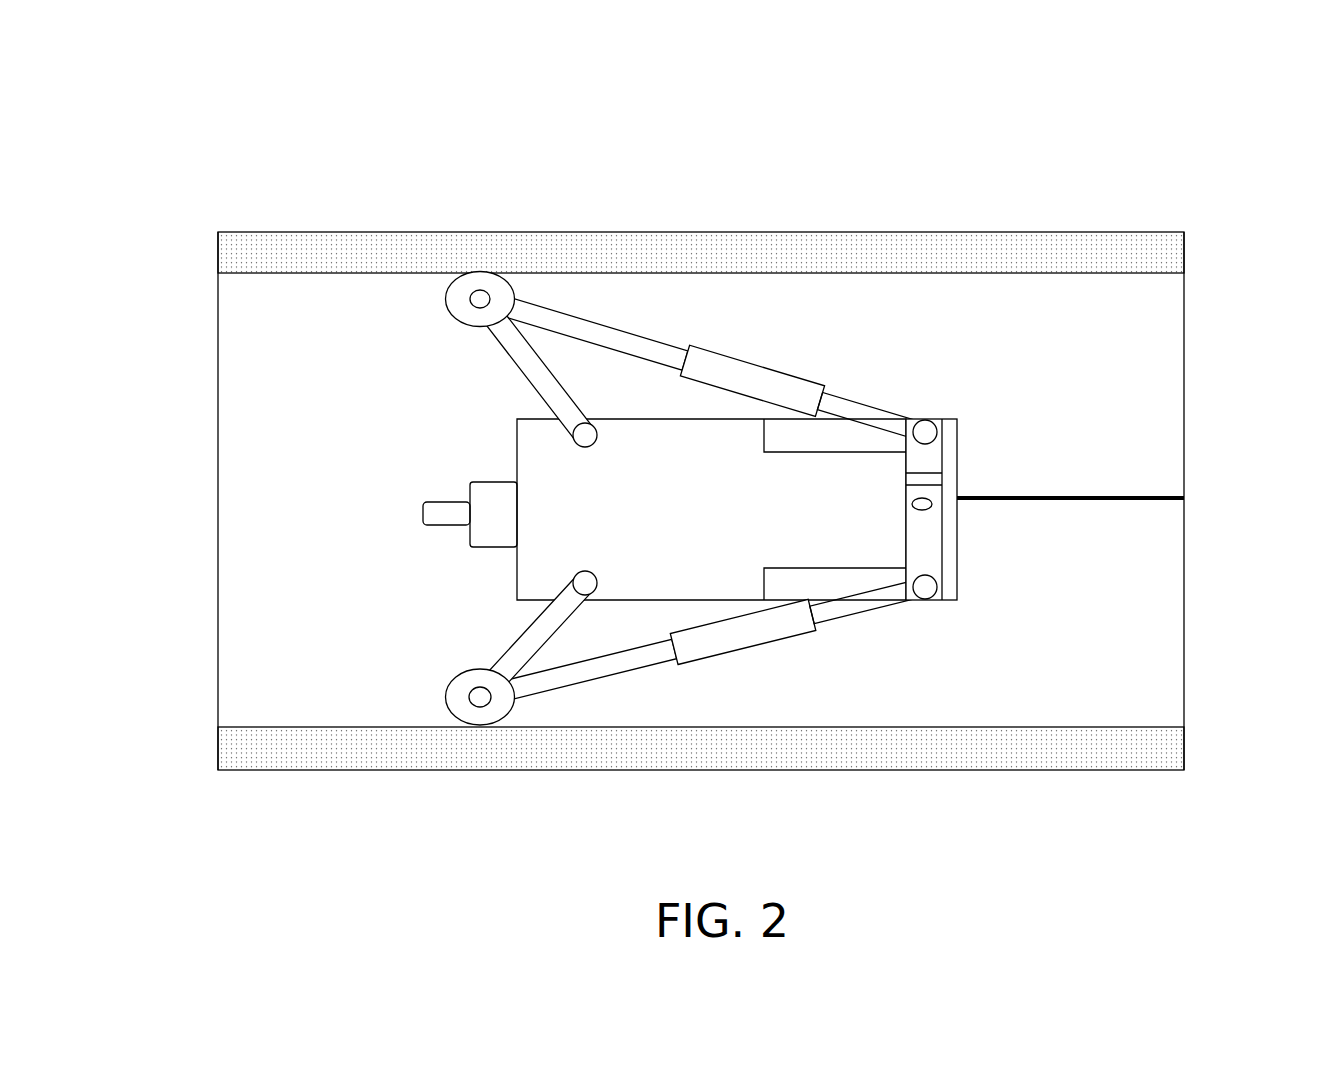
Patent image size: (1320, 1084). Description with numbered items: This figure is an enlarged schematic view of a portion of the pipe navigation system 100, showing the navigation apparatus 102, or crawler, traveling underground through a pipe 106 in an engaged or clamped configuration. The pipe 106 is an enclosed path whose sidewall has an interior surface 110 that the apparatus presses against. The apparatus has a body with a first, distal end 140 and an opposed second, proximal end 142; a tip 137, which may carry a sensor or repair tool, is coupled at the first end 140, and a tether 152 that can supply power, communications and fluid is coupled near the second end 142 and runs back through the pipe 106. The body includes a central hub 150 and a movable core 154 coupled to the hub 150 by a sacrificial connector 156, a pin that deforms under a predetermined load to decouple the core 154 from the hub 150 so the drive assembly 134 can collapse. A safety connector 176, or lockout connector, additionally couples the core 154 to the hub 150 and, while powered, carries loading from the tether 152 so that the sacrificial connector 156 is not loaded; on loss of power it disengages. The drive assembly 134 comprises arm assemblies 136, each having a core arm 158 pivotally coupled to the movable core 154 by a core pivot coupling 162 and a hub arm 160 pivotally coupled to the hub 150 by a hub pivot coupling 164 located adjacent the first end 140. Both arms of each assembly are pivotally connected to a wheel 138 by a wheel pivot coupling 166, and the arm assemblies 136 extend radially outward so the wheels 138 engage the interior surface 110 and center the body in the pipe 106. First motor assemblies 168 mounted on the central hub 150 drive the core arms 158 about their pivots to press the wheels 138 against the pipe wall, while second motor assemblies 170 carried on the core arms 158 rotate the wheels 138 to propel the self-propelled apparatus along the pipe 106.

The pipe navigation system 100 is at (700, 447).
The navigation apparatus 102 is at (661, 466).
The pipe 106 is at (701, 466).
The interior surface 110 is at (282, 272).
The drive assembly 134 is at (440, 278).
The arm assemblies 136 is at (701, 304).
The tip 137 is at (418, 495).
The wheel 138 is at (484, 748).
The first end 140 is at (403, 553).
The second end 142 is at (1000, 560).
The central hub 150 is at (711, 386).
The tether 152 is at (1100, 497).
The movable core 154 is at (930, 457).
The sacrificial connector 156 is at (928, 510).
The core arm 158 is at (845, 618).
The hub arm 160 is at (515, 655).
The core pivot coupling 162 is at (923, 600).
The hub pivot coupling 164 is at (588, 592).
The wheel pivot coupling 166 is at (477, 700).
The first motor assemblies 168 is at (828, 430).
The second motor assemblies 170 is at (733, 356).
The safety connector 176 is at (1026, 503).